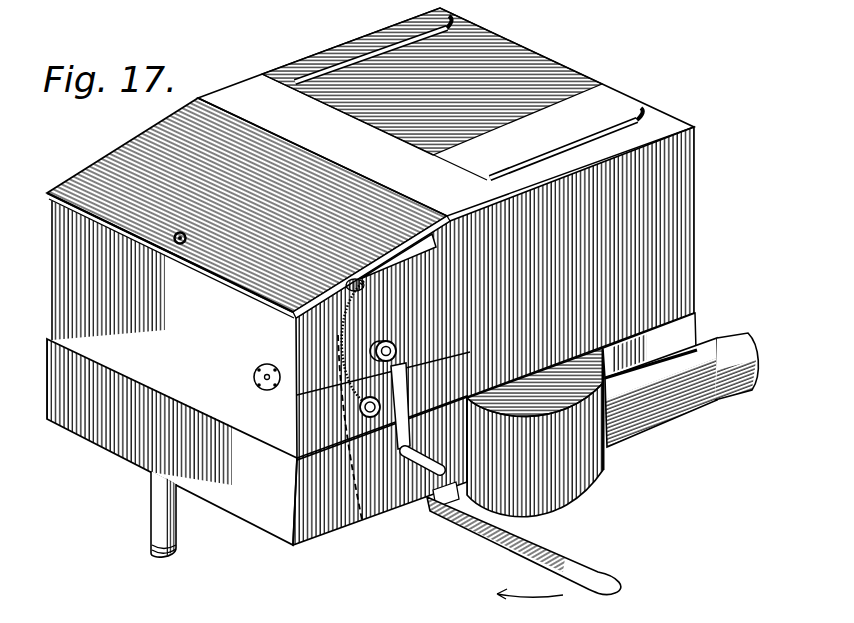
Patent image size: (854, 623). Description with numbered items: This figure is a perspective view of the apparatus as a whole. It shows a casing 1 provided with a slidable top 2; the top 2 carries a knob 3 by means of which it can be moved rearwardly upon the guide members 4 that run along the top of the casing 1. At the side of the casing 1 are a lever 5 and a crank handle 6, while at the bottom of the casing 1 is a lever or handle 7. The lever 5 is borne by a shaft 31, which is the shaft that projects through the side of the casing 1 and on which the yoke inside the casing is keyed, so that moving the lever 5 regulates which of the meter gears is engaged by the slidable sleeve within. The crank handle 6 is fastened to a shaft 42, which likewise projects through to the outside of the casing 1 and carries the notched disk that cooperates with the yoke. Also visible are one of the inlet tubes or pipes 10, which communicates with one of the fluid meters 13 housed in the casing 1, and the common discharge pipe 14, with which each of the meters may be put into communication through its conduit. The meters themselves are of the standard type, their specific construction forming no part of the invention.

The casing 1 is at (687, 271).
The slidable top 2 is at (255, 84).
The knob 3 is at (187, 243).
The guide members 4 is at (384, 48).
The lever 5 is at (343, 281).
The crank handle 6 is at (428, 503).
The lever or handle 7 is at (590, 563).
The inlet tube or pipe 10 is at (730, 348).
The fluid meter 13 is at (563, 467).
The discharge pipe 14 is at (157, 516).
The shaft 31 is at (362, 520).
The shaft 42 is at (294, 399).